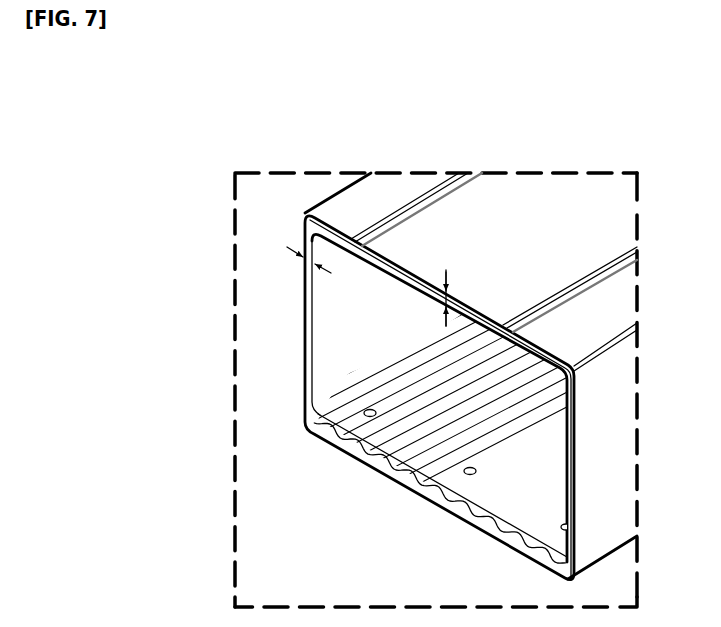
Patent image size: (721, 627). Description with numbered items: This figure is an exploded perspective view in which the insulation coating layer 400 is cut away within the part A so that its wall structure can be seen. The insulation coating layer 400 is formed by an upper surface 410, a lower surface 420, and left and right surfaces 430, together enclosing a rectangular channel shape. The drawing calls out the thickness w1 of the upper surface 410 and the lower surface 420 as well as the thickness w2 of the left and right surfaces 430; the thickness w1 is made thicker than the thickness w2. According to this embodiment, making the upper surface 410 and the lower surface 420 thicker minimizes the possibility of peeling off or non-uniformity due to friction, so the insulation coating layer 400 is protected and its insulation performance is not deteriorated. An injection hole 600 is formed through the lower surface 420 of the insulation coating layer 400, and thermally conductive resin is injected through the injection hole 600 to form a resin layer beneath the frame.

The insulation coating layer 400 is at (158, 262).
The upper surface of the insulation coating layer 410 is at (420, 250).
The lower surface of the insulation coating layer 420 is at (407, 415).
The left and right surfaces of the insulation coating layer 430 is at (337, 327).
The injection hole 600 is at (561, 527).
The thickness of the upper surface and the lower surface w1 is at (446, 298).
The thickness of the left and right surfaces w2 is at (303, 267).
The part A is at (637, 371).